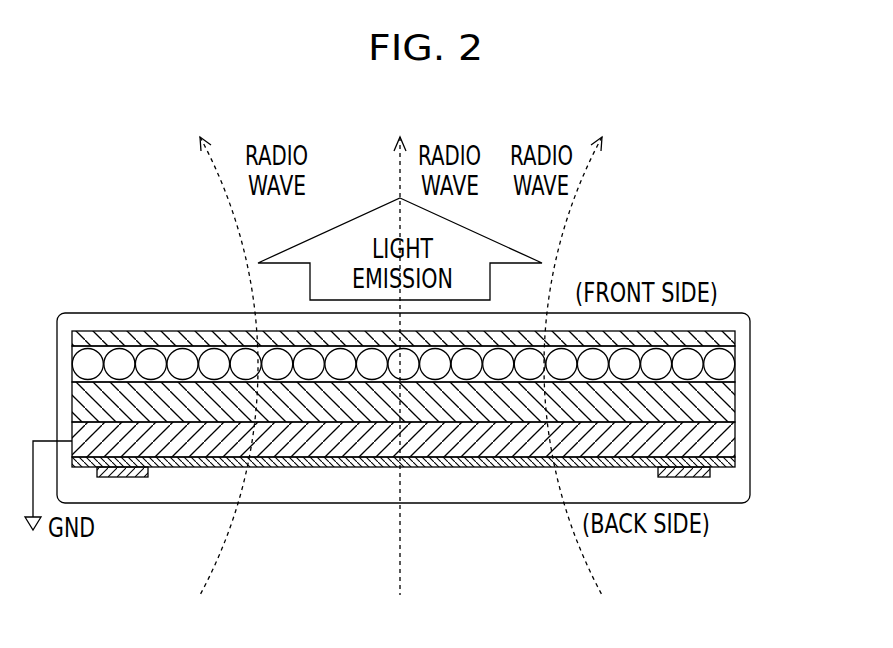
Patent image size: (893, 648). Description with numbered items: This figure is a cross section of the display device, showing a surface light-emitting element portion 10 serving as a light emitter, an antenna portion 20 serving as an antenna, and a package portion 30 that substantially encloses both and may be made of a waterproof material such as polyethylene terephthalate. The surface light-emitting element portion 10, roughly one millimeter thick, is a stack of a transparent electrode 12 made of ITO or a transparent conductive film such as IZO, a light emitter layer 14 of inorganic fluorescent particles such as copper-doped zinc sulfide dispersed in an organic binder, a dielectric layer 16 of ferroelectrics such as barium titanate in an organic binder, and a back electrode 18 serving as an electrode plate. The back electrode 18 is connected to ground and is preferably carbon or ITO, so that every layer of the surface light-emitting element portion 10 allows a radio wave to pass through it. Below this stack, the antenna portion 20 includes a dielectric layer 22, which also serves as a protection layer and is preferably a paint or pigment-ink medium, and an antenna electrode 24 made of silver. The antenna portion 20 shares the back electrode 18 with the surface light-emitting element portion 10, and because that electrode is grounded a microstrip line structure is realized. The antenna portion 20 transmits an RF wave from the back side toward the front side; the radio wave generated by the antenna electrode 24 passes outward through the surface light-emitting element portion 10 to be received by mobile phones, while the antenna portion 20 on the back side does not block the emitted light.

The surface light-emitting element portion 10 is at (462, 389).
The transparent electrode 12 is at (735, 337).
The light emitter layer 14 is at (735, 362).
The dielectric layer 16 is at (735, 400).
The back electrode 18 is at (441, 437).
The antenna portion 20 is at (462, 474).
The dielectric layer 22 is at (735, 459).
The antenna electrode 24 is at (710, 478).
The package portion 30 is at (733, 313).